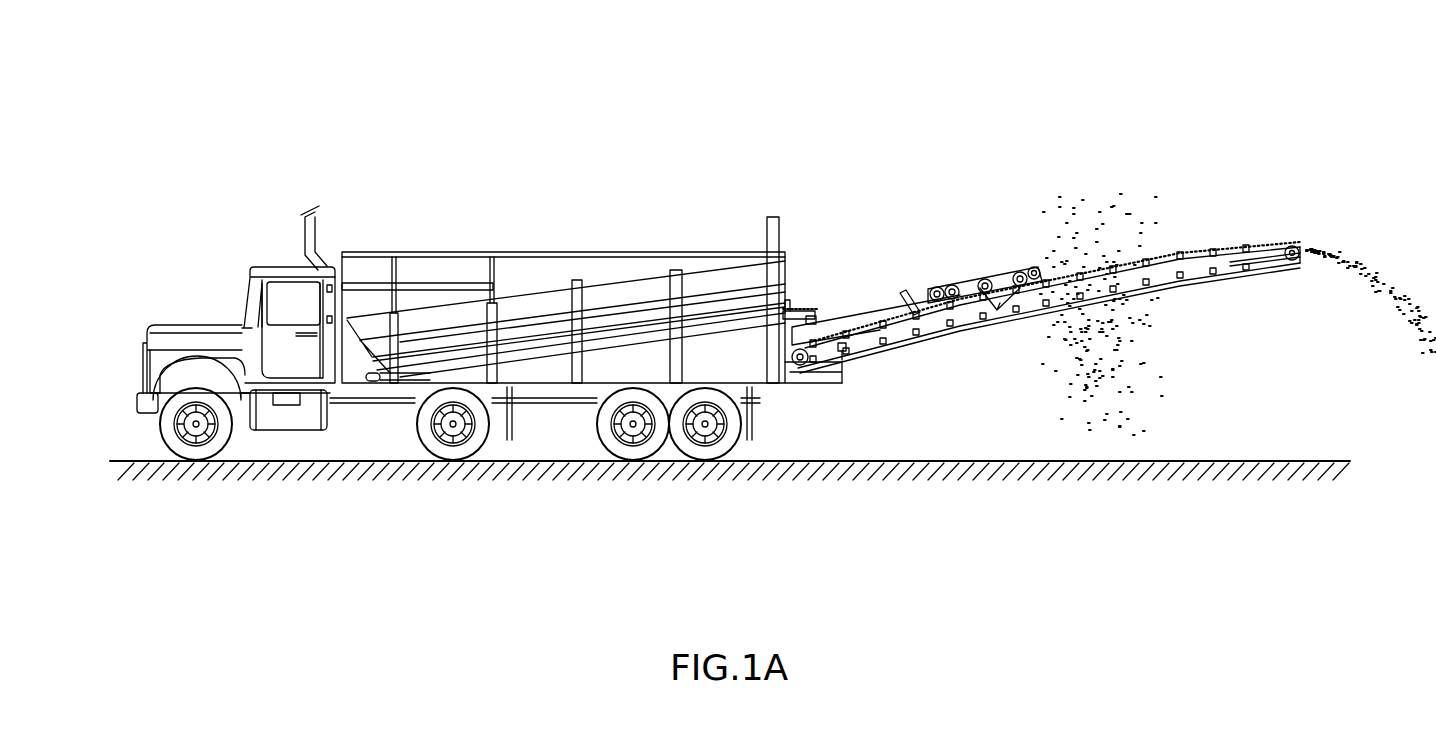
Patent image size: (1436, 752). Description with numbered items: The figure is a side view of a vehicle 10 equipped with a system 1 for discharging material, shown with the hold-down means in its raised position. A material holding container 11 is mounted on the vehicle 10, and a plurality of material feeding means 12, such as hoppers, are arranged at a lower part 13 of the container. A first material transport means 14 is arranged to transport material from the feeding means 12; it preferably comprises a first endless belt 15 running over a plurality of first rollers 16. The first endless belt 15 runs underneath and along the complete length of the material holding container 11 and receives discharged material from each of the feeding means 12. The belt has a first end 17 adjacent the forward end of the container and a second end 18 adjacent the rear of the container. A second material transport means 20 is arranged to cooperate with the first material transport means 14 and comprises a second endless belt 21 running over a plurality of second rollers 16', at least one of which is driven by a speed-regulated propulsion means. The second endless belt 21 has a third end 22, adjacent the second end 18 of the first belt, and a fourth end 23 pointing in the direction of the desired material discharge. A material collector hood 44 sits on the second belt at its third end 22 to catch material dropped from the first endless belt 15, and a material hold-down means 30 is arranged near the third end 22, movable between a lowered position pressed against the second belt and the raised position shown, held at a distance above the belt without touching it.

The system 1 is at (1000, 172).
The vehicle 10 is at (307, 102).
The material holding container 11 is at (507, 265).
The material feeding means 12 is at (727, 317).
The lower part 13 is at (433, 317).
The first material transport means 14 is at (710, 330).
The first endless belt 15 is at (797, 307).
The first rollers 16 is at (573, 382).
The second rollers 16' is at (1083, 340).
The first end 17 is at (413, 373).
The second end 18 is at (793, 307).
The second material transport means 20 is at (1178, 238).
The second endless belt 21 is at (1148, 293).
The third end 22 is at (848, 350).
The fourth end 23 is at (1268, 262).
The material hold-down means 30 is at (951, 263).
The material collector hood 44 is at (890, 313).